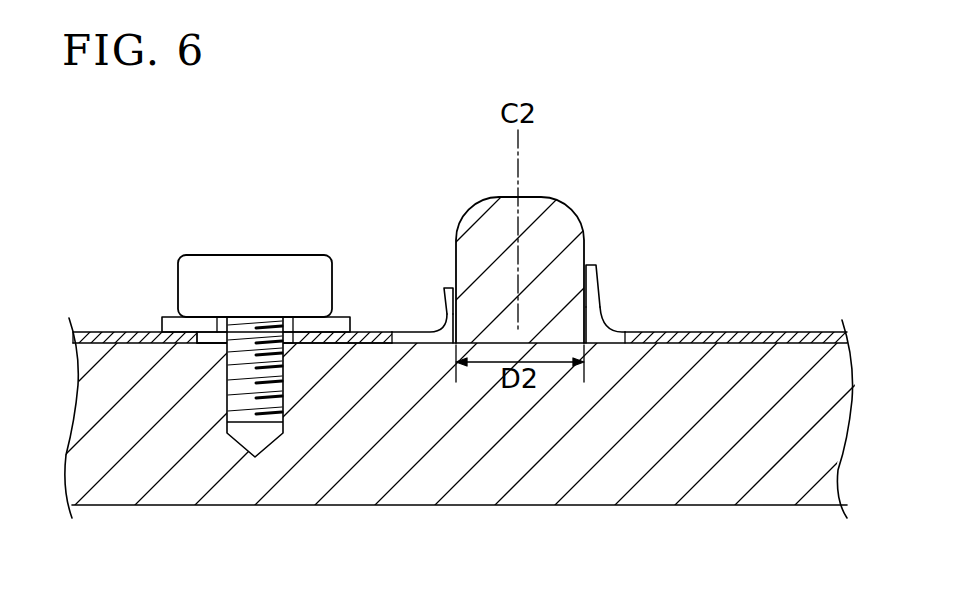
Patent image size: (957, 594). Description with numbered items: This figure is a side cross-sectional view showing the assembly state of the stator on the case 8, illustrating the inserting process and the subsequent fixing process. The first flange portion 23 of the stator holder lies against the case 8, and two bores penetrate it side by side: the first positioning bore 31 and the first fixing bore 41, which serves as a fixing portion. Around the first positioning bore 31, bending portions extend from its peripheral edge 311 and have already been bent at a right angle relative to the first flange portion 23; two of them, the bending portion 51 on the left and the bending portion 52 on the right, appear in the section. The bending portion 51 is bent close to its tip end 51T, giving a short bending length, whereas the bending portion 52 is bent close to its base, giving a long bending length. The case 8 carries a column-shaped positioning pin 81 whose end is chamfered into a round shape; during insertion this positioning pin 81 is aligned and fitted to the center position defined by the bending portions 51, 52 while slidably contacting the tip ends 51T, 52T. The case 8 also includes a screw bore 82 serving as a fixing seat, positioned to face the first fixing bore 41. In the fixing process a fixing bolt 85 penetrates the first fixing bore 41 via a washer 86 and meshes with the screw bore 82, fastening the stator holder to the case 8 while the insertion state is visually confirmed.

The case 8 is at (446, 505).
The first positioning bore 31 is at (452, 343).
The peripheral edge 311 is at (332, 343).
The first flange portion 23 is at (105, 337).
The first fixing bore 41 is at (212, 337).
The screw bore 82 is at (227, 383).
The fixing bolt 85 is at (218, 275).
The washer 86 is at (340, 328).
The positioning pin 81 is at (547, 220).
The bending portion 51 is at (413, 338).
The tip end 51T is at (445, 293).
The bending portion 52 is at (597, 317).
The tip end 52T is at (595, 268).